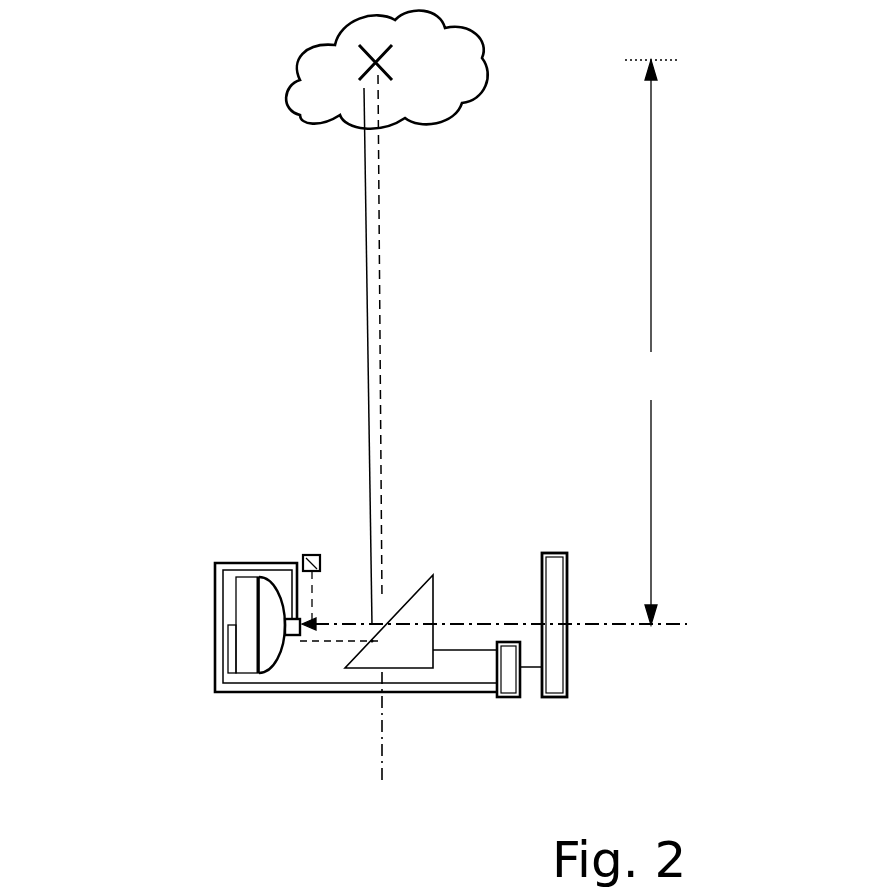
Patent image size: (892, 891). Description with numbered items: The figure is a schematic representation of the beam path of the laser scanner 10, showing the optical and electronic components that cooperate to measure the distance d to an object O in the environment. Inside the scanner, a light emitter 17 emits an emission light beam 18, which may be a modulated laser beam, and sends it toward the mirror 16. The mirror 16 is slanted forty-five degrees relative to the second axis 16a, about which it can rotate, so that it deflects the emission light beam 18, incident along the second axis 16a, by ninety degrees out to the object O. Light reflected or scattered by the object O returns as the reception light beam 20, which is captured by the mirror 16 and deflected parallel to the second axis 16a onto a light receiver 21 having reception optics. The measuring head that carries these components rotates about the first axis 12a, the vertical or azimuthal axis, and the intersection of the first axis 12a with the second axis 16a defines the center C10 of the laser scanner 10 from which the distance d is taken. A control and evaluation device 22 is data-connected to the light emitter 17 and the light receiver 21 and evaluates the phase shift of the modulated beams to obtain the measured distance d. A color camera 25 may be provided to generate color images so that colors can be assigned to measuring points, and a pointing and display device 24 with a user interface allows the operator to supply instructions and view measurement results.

The laser scanner 10 is at (183, 230).
The object O is at (483, 57).
The reception light beam 20 is at (366, 312).
The emission light beam 18 is at (381, 262).
The distance d is at (651, 342).
The control and evaluation device 22 is at (208, 623).
The light receiver 21 is at (240, 668).
The color camera 25 is at (293, 640).
The light emitter 17 is at (312, 553).
The second axis 16a is at (687, 625).
The mirror 16 is at (348, 660).
The pointing and display device 24 is at (570, 672).
The first axis 12a is at (382, 758).
The center C10 is at (370, 643).